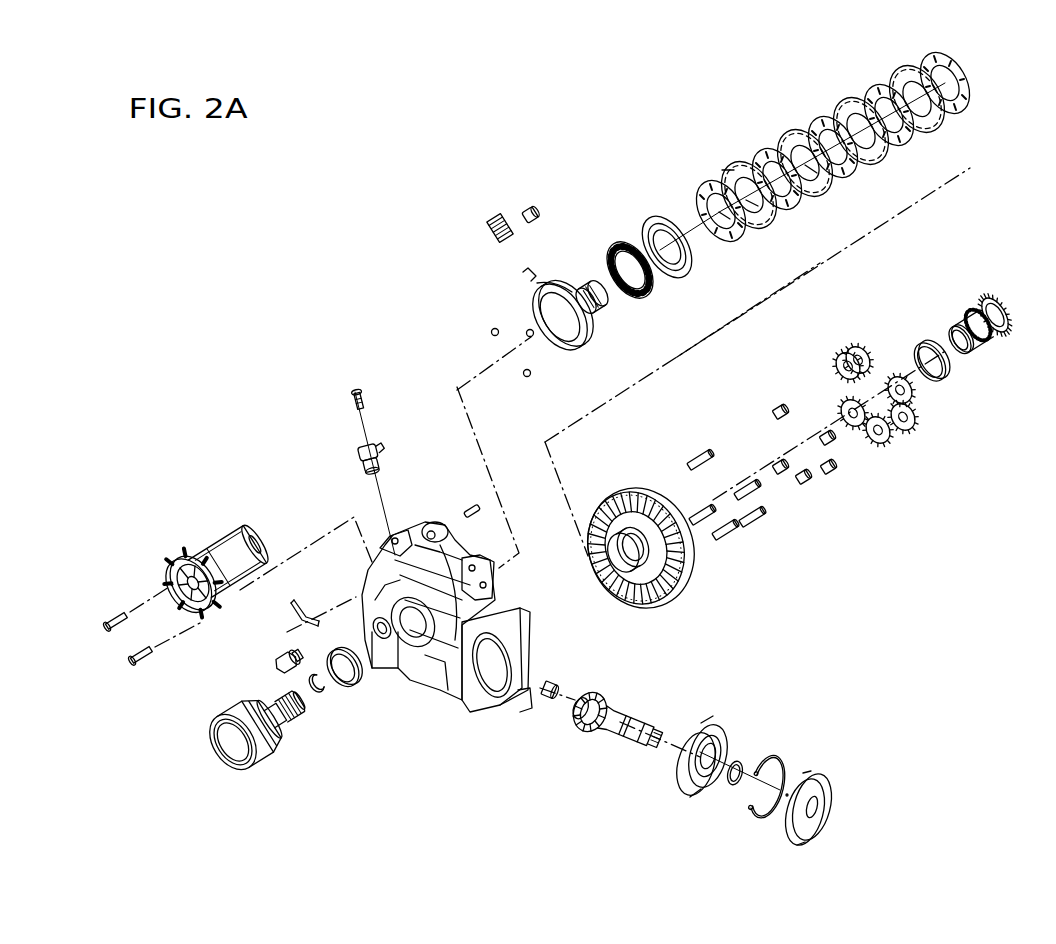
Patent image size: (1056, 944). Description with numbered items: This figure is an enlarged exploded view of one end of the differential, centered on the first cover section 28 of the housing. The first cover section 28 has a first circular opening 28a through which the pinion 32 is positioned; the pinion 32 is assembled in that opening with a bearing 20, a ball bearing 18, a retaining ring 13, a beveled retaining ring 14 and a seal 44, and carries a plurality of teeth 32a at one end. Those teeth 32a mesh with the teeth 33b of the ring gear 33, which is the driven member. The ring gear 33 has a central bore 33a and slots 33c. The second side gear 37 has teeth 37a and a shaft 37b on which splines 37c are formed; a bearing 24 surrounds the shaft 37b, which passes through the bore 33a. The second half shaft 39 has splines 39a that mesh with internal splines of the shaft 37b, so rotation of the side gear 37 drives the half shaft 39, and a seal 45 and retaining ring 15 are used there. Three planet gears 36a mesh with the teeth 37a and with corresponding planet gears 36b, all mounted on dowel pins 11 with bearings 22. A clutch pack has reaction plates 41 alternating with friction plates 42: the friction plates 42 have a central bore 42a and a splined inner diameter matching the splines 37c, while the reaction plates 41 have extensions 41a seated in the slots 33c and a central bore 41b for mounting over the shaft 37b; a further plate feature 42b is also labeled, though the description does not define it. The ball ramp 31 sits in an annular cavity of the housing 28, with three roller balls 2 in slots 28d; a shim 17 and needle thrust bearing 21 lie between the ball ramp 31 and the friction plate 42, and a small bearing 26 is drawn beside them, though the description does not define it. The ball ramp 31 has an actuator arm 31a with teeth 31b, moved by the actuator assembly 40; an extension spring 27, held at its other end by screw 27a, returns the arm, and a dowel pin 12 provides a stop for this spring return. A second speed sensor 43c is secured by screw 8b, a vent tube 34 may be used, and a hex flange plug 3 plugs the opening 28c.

The roller balls 2 is at (487, 329).
The hex flange plug 3 is at (278, 664).
The screw 8b is at (346, 383).
The dowel pins 11 is at (723, 543).
The dowel pin 12 is at (468, 502).
The retaining ring 13 is at (724, 795).
The beveled retaining ring 14 is at (749, 822).
The retaining ring 15 is at (319, 701).
The shim 17 is at (658, 208).
The ball bearing 18 is at (684, 790).
The bearing 20 is at (546, 704).
The needle thrust bearing 21 is at (618, 235).
The bearings 22 is at (809, 490).
The bearing 24 is at (942, 385).
The bearing 26 is at (585, 275).
The extension spring 27 is at (499, 217).
The screw 27a is at (527, 205).
The first cover section 28 is at (421, 682).
The first circular opening 28a is at (514, 641).
The opening 28c is at (346, 612).
The slots 28d is at (412, 652).
The ball ramp 31 is at (530, 298).
The actuator arm 31a is at (518, 267).
The teeth 31b is at (549, 283).
The pinion 32 is at (594, 737).
The teeth 32a is at (592, 696).
The ring gear 33 is at (678, 612).
The central bore 33a is at (628, 500).
The teeth 33b is at (593, 502).
The slots 33c is at (617, 592).
The vent tube 34 is at (313, 608).
The planet gears 36a is at (863, 343).
The planet gears 36b is at (845, 356).
The second side gear 37 is at (977, 352).
The teeth 37a is at (1000, 295).
The shaft 37b is at (955, 325).
The splines 37c is at (975, 300).
The second half shaft 39 is at (233, 775).
The splines 39a is at (286, 695).
The actuator assembly 40 is at (172, 561).
The reaction plates 41 is at (763, 158).
The extensions 41a is at (728, 160).
The central bore 41b is at (753, 204).
The friction plates 42 is at (705, 177).
The central bore 42a is at (725, 222).
The clutch disc 42b is at (813, 170).
The second speed sensor 43c is at (376, 441).
The seal 44 is at (796, 846).
The seal 45 is at (351, 698).